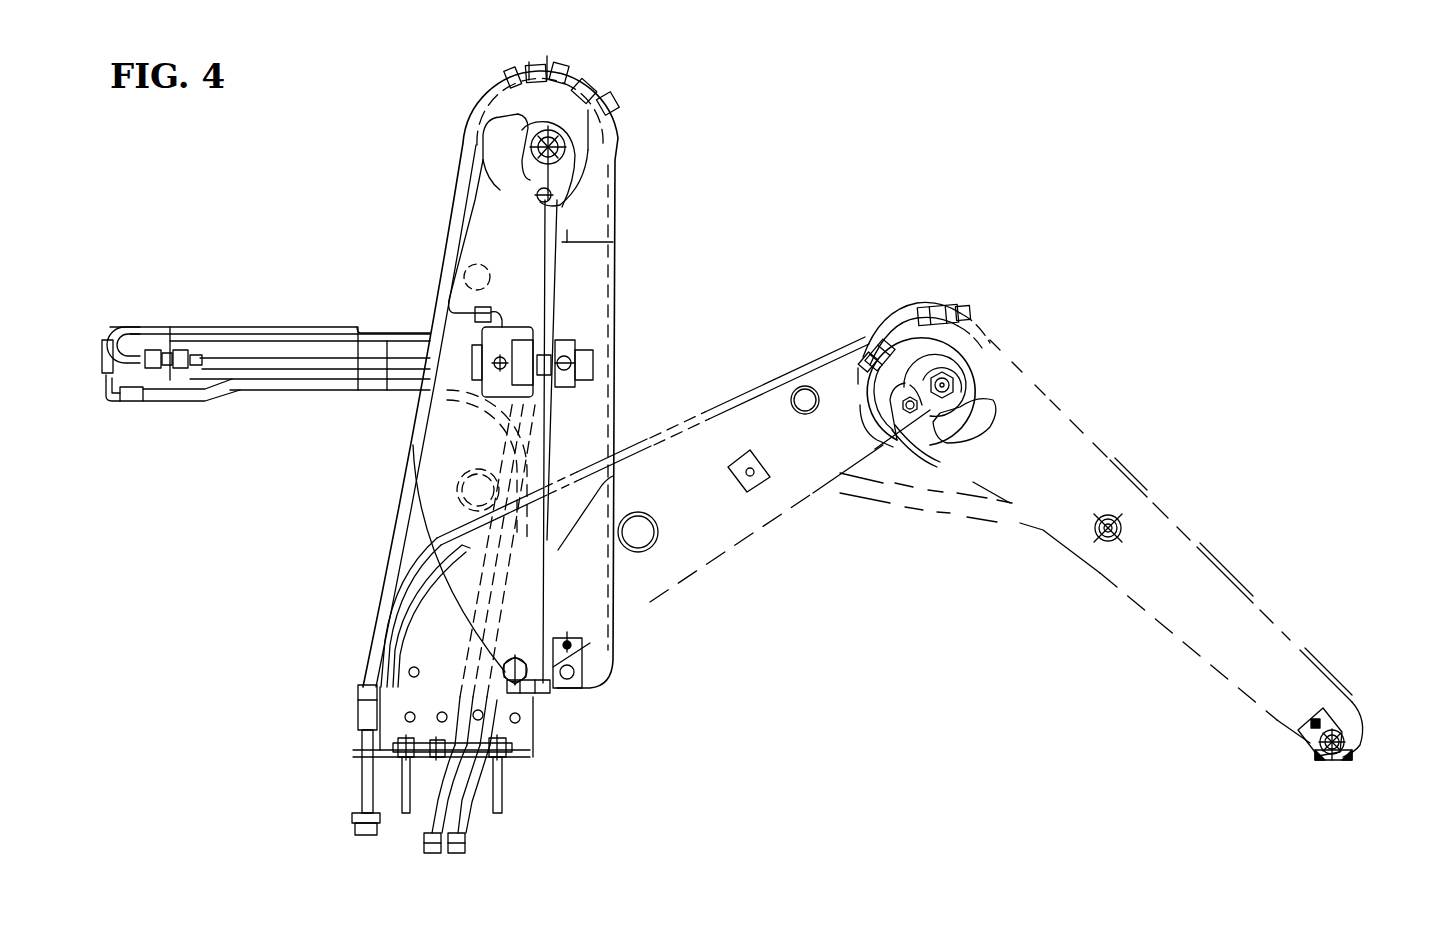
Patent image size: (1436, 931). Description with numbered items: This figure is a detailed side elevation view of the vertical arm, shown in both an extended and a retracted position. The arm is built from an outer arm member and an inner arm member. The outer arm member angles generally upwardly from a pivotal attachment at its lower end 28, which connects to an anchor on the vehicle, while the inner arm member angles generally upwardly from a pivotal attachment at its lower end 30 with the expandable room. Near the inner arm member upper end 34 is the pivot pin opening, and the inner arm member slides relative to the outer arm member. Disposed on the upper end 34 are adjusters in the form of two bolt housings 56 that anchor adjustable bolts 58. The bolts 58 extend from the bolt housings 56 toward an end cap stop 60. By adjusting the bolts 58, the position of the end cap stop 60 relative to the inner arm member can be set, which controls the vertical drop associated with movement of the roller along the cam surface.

The lower end 28 is at (475, 593).
The lower end 30 is at (597, 663).
The upper end 34 is at (1029, 391).
The bolt housings 56 is at (933, 332).
The adjustable bolts 58 is at (863, 357).
The end cap stop 60 is at (893, 312).